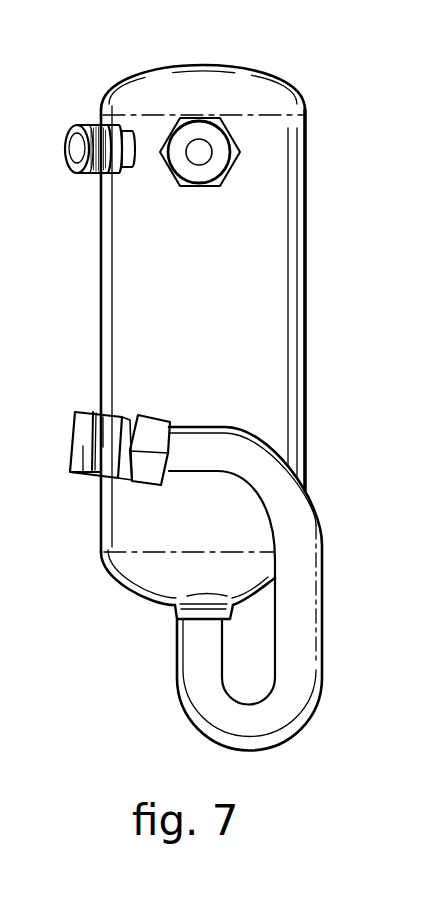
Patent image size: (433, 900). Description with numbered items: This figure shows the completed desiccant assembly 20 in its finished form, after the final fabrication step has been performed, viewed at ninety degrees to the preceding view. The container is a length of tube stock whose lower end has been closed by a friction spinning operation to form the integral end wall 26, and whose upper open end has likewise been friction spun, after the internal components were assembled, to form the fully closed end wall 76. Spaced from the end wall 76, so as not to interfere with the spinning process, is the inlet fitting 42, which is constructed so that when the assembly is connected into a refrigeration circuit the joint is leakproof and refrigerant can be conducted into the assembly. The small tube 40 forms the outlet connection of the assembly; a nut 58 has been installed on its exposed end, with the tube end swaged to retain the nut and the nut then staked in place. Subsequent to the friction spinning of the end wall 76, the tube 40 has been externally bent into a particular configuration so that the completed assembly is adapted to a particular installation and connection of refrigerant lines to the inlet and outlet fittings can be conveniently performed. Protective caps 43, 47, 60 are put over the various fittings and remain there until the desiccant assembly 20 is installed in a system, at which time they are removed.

The desiccant assembly 20 is at (208, 381).
The end wall 26 is at (247, 270).
The tube 40 is at (248, 505).
The inlet fitting 42 is at (232, 128).
The protective cap 43 is at (217, 158).
The protective cap 47 is at (93, 128).
The nut 58 is at (163, 421).
The protective cap 60 is at (120, 413).
The end wall 76 is at (185, 86).